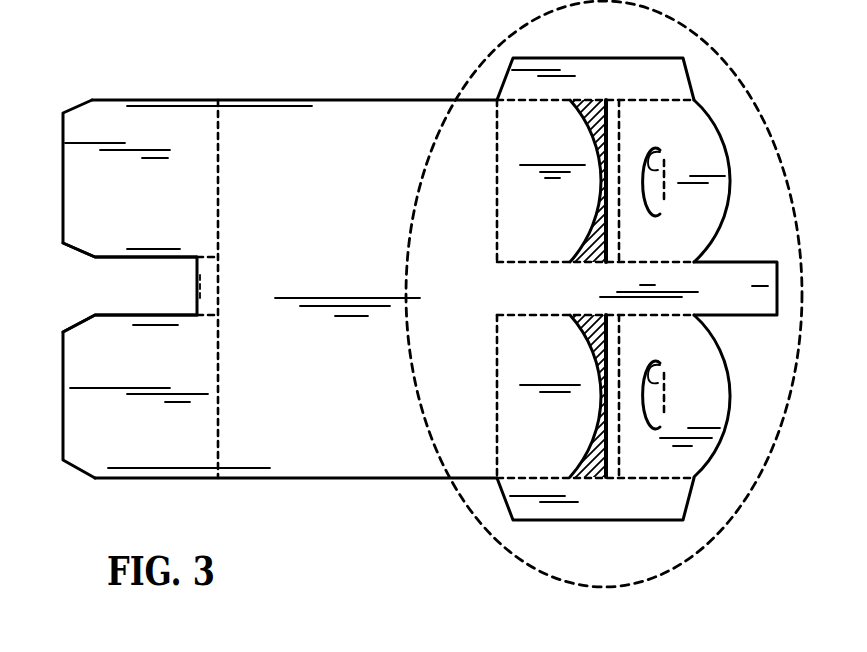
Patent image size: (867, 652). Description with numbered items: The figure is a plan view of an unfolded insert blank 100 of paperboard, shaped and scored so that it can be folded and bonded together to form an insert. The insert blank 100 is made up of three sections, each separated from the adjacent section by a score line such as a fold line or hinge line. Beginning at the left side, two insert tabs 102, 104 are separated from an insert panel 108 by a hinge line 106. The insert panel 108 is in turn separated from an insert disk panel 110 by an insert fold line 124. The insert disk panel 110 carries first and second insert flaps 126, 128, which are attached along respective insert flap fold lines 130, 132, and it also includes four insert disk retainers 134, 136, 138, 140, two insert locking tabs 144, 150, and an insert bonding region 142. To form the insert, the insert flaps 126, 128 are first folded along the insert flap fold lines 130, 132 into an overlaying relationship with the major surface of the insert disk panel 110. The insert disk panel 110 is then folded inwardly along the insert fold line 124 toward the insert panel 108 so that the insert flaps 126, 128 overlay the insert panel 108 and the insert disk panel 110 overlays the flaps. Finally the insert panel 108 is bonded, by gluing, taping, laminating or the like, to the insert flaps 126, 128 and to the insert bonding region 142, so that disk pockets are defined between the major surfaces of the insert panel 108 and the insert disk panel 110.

The insert blank 100 is at (172, 28).
The insert tab 102 is at (103, 250).
The insert tab 104 is at (99, 322).
The hinge line 106 is at (220, 176).
The insert panel 108 is at (393, 110).
The insert disk panel 110 is at (712, 42).
The insert fold line 124 is at (497, 272).
The first insert flap 126 is at (672, 75).
The second insert flap 128 is at (668, 500).
The insert flap fold line 130 is at (653, 100).
The insert flap fold line 132 is at (655, 480).
The insert disk retainer 134 is at (515, 212).
The insert disk retainer 136 is at (505, 373).
The insert disk retainer 138 is at (712, 212).
The insert disk retainer 140 is at (713, 412).
The insert bonding region 142 is at (738, 305).
The insert locking tab 144 is at (647, 160).
The insert locking tab 150 is at (647, 372).